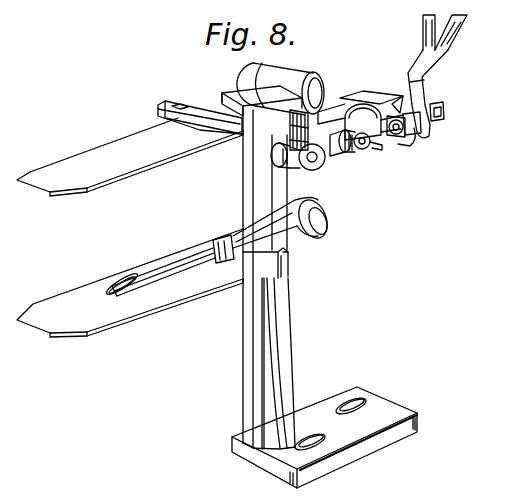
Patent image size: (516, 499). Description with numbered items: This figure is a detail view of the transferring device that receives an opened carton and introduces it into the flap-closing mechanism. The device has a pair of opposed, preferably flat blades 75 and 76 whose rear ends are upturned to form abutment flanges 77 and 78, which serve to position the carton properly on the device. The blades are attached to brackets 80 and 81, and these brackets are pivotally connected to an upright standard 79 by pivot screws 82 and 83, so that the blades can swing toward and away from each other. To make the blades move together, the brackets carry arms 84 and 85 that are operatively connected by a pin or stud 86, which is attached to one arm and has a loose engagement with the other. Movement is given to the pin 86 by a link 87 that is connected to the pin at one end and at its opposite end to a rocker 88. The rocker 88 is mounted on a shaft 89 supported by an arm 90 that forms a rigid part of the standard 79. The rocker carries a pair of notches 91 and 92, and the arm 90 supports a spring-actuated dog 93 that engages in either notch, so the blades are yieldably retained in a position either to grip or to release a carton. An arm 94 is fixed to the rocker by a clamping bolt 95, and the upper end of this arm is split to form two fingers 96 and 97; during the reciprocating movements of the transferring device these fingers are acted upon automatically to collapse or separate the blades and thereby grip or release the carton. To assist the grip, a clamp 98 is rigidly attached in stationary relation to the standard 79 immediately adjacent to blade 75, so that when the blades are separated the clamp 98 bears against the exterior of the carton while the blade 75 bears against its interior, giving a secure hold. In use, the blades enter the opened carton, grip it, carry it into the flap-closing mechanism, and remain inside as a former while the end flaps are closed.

The blade 75 is at (88, 155).
The blade 76 is at (88, 290).
The abutment flange 77 is at (257, 91).
The abutment flange 78 is at (286, 265).
The standard 79 is at (253, 365).
The bracket 80 is at (283, 130).
The bracket 81 is at (240, 229).
The pivot screw 82 is at (304, 95).
The pivot screw 83 is at (322, 225).
The arm 84 is at (298, 153).
The arm 85 is at (292, 182).
The pin 86 is at (340, 153).
The link 87 is at (356, 152).
The rocker 88 is at (378, 145).
The shaft 89 is at (400, 132).
The arm 90 is at (330, 124).
The notch 91 is at (433, 135).
The notch 92 is at (430, 128).
The spring-actuated dog 93 is at (388, 97).
The arm 94 is at (430, 98).
The clamping bolt 95 is at (444, 113).
The finger 96 is at (423, 33).
The finger 97 is at (452, 37).
The clamp 98 is at (188, 114).